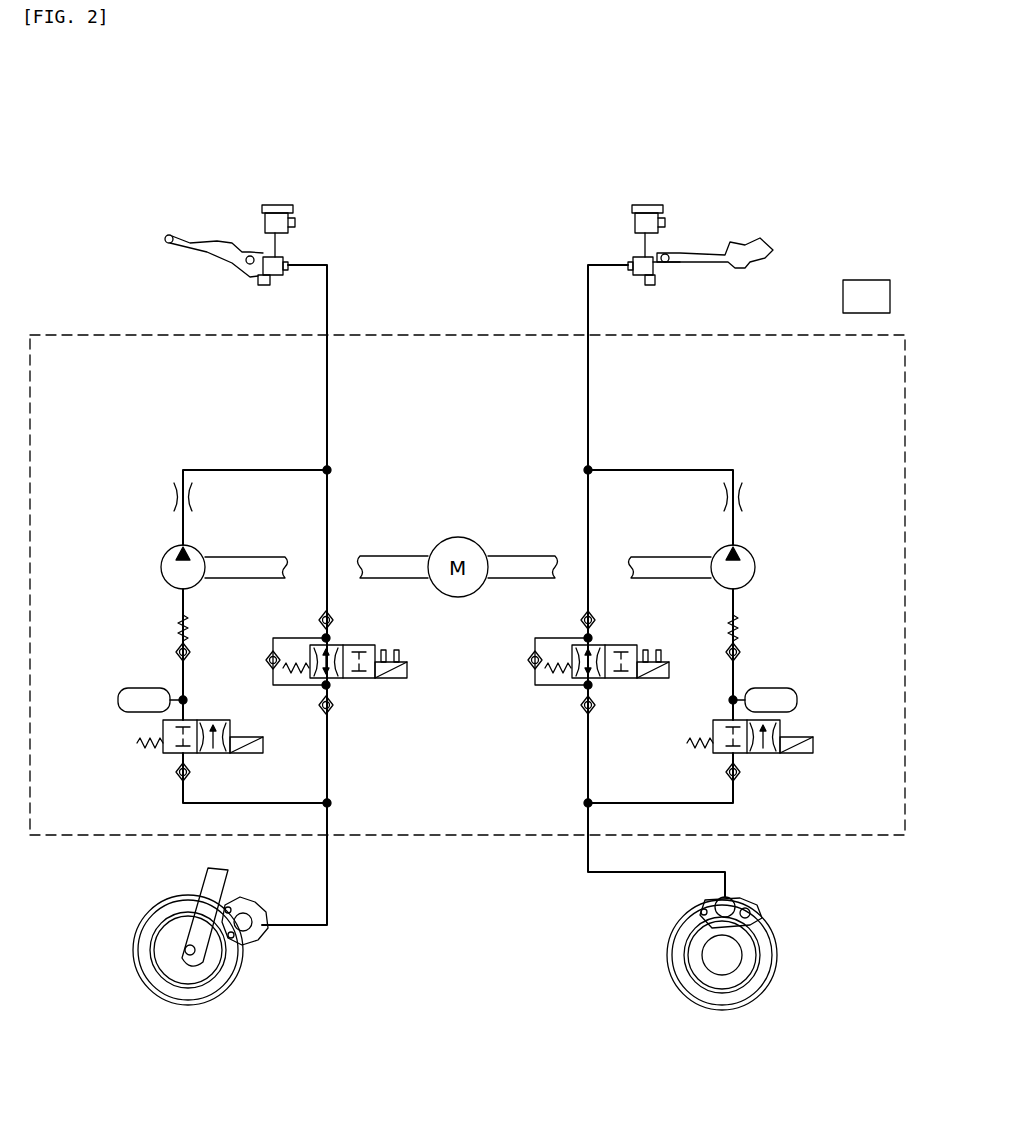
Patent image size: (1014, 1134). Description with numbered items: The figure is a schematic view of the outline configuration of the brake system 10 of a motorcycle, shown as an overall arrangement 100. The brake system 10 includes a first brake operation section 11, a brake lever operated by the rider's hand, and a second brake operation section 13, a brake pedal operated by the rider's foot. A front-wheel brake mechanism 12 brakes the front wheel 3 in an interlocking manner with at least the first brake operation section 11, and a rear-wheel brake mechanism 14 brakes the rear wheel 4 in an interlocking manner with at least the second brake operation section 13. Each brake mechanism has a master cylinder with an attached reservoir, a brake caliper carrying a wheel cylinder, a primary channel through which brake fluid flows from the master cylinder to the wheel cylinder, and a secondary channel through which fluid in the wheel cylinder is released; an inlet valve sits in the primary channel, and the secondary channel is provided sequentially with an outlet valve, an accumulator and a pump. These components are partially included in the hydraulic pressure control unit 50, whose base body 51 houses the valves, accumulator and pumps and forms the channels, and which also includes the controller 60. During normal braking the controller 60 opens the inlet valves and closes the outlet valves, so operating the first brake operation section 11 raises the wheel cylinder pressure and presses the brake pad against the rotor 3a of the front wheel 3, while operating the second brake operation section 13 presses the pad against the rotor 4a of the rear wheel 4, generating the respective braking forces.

The brake system 100 is at (894, 92).
The front-wheel brake mechanism 12 is at (365, 148).
The rear-wheel brake mechanism 14 is at (555, 148).
The brake system 10 is at (126, 228).
The first brake operation section 11 is at (198, 240).
The second brake operation section 13 is at (750, 244).
The hydraulic pressure control unit 50 is at (799, 250).
The base body 51 is at (60, 334).
The controller 60 is at (860, 279).
The front wheel 3 is at (215, 980).
The rotor 3a is at (232, 978).
The rear wheel 4 is at (697, 996).
The rotor 4a is at (680, 980).